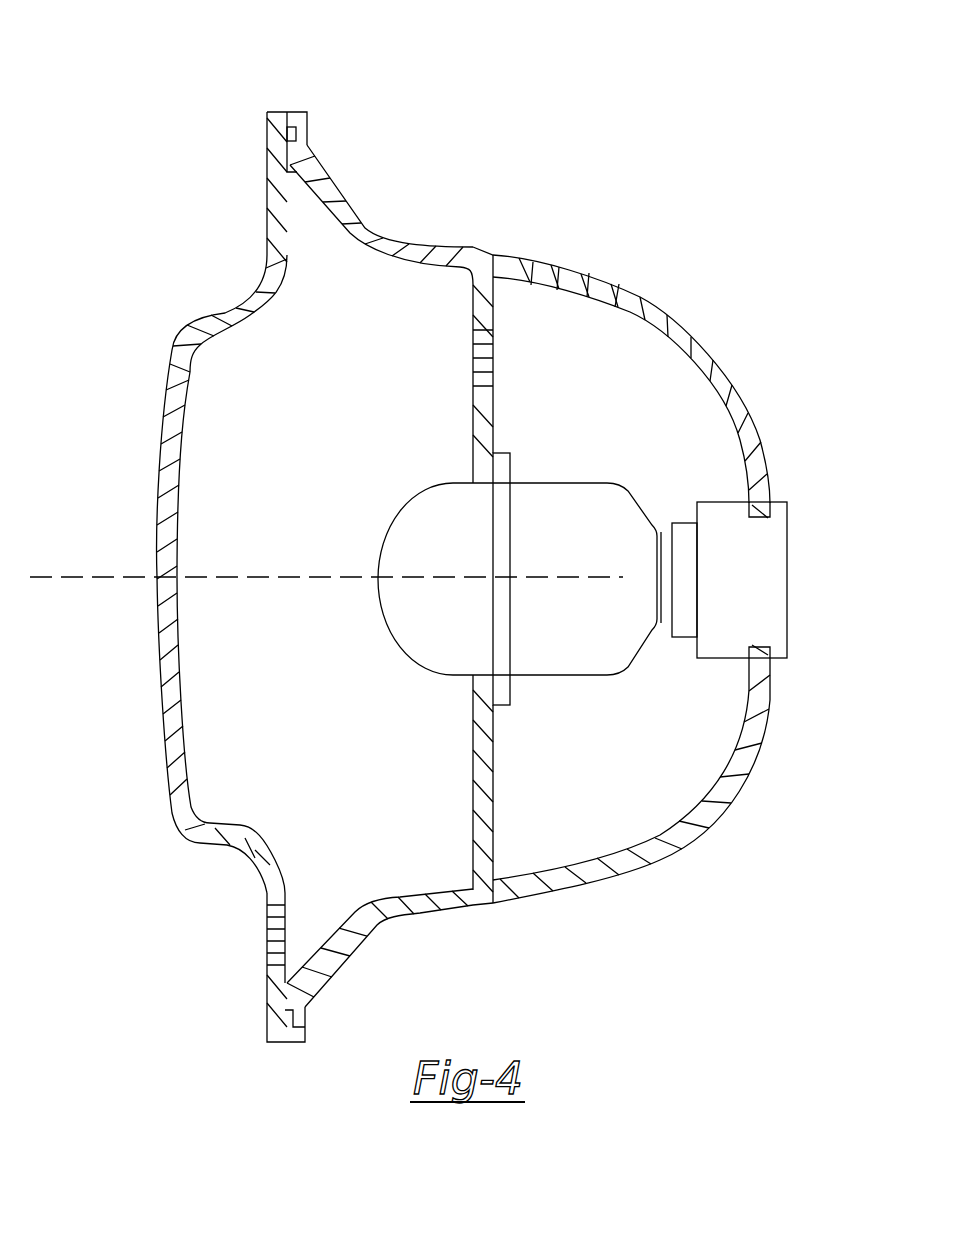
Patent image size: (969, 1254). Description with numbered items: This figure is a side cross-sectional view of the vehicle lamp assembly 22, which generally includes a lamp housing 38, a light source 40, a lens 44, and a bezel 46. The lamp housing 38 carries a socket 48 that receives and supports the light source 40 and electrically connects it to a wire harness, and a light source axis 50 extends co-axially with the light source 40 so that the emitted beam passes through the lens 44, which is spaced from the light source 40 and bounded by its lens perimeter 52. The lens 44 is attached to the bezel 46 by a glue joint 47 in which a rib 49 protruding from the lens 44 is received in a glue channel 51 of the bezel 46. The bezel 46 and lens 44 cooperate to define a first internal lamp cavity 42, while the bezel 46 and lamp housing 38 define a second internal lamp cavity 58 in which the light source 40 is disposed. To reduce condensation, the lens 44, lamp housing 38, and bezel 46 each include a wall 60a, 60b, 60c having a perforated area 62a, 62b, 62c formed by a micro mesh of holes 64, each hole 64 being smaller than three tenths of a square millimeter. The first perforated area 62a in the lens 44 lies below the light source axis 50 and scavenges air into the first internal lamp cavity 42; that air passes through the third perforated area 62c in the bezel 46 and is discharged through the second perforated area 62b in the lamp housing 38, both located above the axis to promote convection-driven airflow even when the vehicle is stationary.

The vehicle lamp assembly 22 is at (680, 97).
The lamp housing 38 is at (717, 341).
The light source 40 is at (407, 633).
The first internal lamp cavity 42 is at (226, 450).
The lens 44 is at (160, 677).
The bezel 46 is at (400, 236).
The glue joint 47 is at (292, 120).
The socket 48 is at (778, 606).
The rib 49 is at (285, 124).
The light source axis 50 is at (102, 575).
The glue channel 51 is at (292, 131).
The lens perimeter 52 is at (268, 856).
The second internal lamp cavity 58 is at (594, 430).
The wall 60a is at (267, 895).
The wall 60b is at (662, 305).
The wall 60c is at (470, 447).
The first perforated area 62a is at (221, 961).
The second perforated area 62b is at (632, 227).
The third perforated area 62c is at (466, 341).
The hole 64 is at (617, 283).